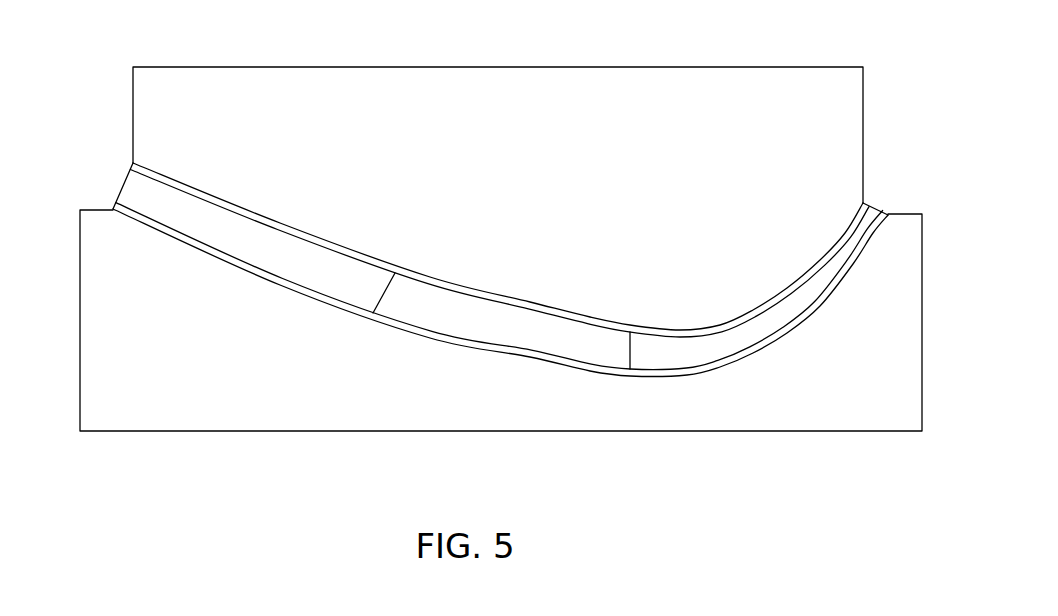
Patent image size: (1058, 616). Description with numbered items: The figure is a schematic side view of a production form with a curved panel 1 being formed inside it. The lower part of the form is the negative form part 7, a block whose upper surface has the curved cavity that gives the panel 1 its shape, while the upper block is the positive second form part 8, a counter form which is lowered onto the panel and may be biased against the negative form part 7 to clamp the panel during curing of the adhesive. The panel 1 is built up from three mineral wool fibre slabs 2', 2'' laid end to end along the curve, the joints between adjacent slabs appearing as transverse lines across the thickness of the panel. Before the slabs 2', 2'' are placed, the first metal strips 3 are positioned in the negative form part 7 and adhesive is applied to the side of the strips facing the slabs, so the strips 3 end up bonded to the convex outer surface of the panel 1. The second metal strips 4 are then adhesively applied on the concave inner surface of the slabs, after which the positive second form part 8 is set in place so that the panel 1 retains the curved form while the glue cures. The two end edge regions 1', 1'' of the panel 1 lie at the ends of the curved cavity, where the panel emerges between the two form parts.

The panel 1 is at (500, 242).
The end edge region 1' is at (896, 188).
The end edge region 1'' is at (86, 182).
The slab 2' is at (321, 236).
The slab 2'' is at (631, 305).
The first metal strips 3 is at (857, 292).
The second metal strips 4 is at (838, 244).
The negative form part 7 is at (365, 417).
The positive second form part 8 is at (619, 84).